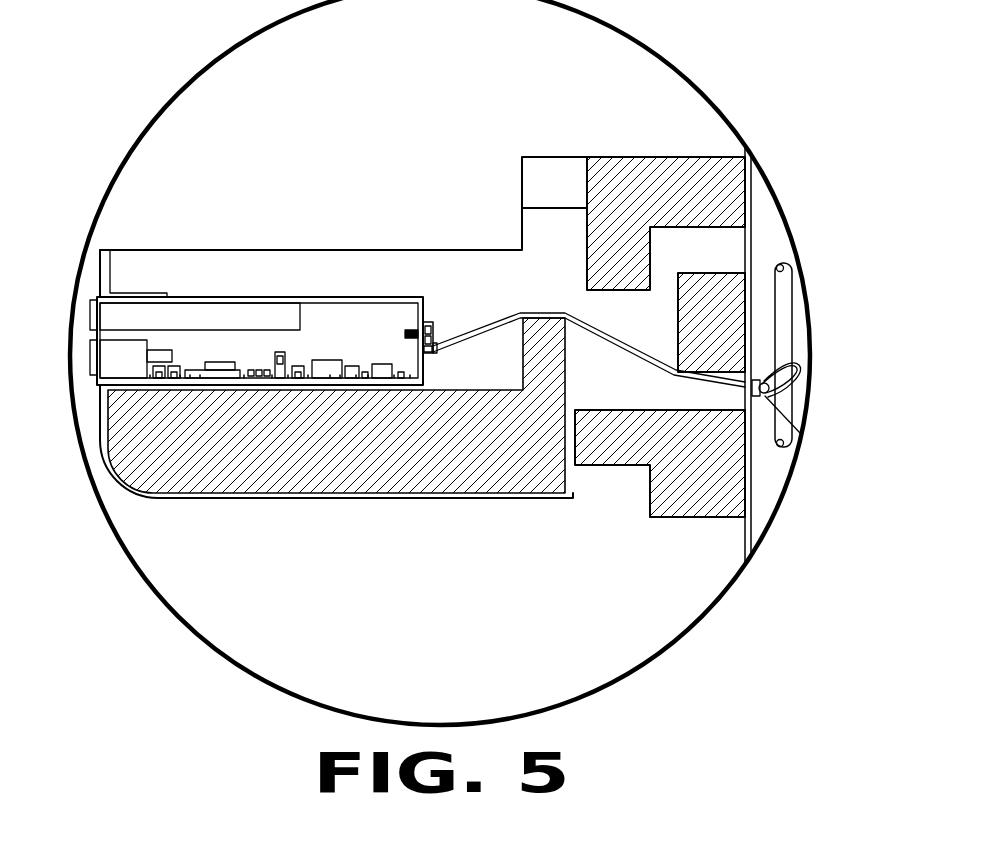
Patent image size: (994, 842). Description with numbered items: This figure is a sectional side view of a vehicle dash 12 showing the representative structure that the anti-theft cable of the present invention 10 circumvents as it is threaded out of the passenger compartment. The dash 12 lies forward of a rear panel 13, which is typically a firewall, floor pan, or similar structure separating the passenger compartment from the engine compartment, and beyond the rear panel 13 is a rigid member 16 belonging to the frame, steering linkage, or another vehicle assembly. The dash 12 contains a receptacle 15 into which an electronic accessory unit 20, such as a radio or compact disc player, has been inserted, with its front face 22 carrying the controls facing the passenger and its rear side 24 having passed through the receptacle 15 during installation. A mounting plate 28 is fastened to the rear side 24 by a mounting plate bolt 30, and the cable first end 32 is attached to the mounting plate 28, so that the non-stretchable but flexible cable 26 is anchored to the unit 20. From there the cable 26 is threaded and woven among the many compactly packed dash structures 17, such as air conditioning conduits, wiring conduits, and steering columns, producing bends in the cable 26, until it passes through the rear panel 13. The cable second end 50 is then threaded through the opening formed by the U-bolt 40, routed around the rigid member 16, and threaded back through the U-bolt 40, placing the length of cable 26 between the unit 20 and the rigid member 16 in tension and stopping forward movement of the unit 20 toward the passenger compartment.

The present invention 10 is at (563, 268).
The dash 12 is at (325, 265).
The rear panel 13 is at (753, 500).
The receptacle 15 is at (100, 297).
The rigid member 16 is at (791, 305).
The dash structures 17 is at (695, 293).
The electronic accessory unit 20 is at (255, 343).
The accessory unit front face 22 is at (88, 360).
The accessory unit rear side 24 is at (425, 323).
The cable 26 is at (617, 347).
The mounting plate 28 is at (427, 322).
The mounting plate bolt 30 is at (433, 353).
The cable first end 32 is at (440, 352).
The U-bolt 40 is at (762, 397).
The cable second end 50 is at (797, 378).